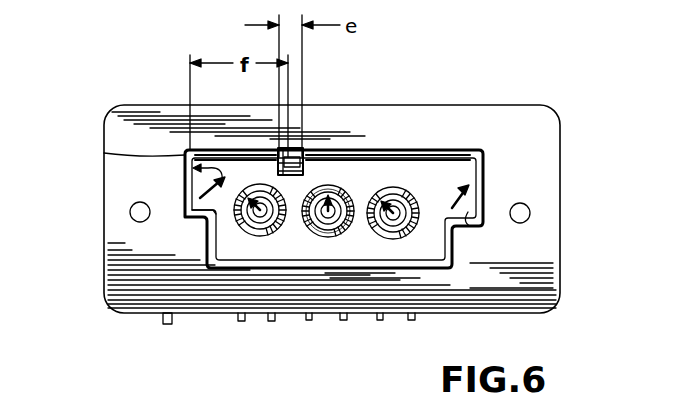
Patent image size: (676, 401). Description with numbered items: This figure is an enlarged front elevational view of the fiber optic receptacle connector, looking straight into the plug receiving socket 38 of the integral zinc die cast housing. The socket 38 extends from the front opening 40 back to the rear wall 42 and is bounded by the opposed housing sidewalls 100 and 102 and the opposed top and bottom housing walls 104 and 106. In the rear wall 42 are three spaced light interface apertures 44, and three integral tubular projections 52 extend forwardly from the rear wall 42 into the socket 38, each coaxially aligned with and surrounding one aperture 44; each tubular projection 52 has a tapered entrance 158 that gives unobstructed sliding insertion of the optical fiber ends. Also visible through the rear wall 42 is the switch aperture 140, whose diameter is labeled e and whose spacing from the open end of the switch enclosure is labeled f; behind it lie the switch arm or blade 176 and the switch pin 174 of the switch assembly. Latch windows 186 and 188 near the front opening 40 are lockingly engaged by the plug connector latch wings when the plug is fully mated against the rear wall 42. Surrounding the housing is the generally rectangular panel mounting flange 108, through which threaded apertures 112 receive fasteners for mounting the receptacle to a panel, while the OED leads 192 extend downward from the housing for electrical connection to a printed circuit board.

The housing sidewall 100 is at (104, 153).
The housing sidewall 102 is at (484, 178).
The top housing wall 104 is at (440, 146).
The bottom housing wall 106 is at (404, 270).
The panel mounting flange 108 is at (513, 265).
The threaded aperture 112 is at (530, 212).
The switch aperture 140 is at (302, 162).
The tapered entrance 158 is at (350, 205).
The switch pin 174 is at (167, 324).
The switch arm or blade 176 is at (293, 176).
The latch window 186 is at (197, 180).
The latch window 188 is at (463, 227).
The OED leads 192 is at (271, 322).
The plug receiving socket 38 is at (205, 217).
The front opening 40 is at (232, 157).
The rear wall 42 is at (306, 254).
The light interface aperture 44 is at (256, 212).
The tubular projection 52 is at (262, 184).